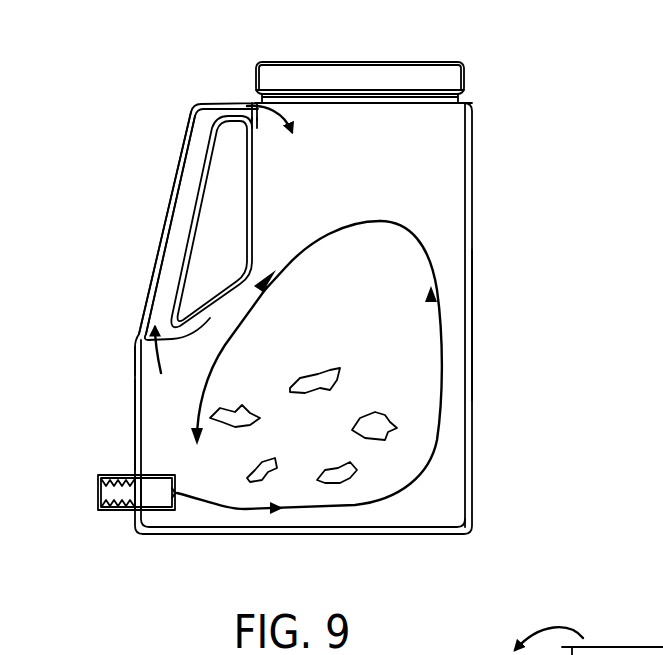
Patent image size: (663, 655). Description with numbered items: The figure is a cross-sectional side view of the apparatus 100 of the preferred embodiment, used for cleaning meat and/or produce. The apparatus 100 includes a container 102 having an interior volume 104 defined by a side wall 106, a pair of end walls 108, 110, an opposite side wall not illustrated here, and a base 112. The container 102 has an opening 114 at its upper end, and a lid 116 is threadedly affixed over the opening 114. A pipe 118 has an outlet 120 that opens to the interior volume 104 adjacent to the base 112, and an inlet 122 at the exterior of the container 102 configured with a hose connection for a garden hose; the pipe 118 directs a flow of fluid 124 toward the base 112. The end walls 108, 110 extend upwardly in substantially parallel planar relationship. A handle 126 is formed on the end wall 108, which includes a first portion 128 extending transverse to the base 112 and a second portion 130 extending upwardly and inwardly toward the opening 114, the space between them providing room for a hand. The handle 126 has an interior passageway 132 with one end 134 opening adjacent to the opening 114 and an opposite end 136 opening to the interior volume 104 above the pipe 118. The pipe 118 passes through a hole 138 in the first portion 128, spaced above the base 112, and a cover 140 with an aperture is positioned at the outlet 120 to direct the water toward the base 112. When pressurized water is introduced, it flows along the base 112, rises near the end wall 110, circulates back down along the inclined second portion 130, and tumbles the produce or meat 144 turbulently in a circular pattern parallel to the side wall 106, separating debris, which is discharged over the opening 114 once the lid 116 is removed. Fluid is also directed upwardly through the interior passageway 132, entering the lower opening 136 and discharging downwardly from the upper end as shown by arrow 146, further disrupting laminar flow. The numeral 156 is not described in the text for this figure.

The apparatus 100 is at (528, 256).
The container 102 is at (467, 367).
The interior volume 104 is at (445, 196).
The side wall 106 is at (450, 143).
The end wall 108 is at (136, 412).
The end wall 110 is at (470, 328).
The base 112 is at (404, 536).
The opening 114 is at (445, 78).
The lid 116 is at (372, 62).
The pipe 118 is at (107, 477).
The outlet 120 is at (180, 494).
The inlet 122 is at (98, 500).
The flow of fluid 124 is at (403, 487).
The handle 126 is at (170, 244).
The first portion 128 is at (133, 350).
The second portion 130 is at (252, 253).
The interior passageway 132 is at (192, 177).
The end 134 is at (252, 118).
The opposite end 136 is at (158, 342).
The hole 138 is at (148, 472).
The cover 140 is at (216, 441).
The produce or meat 144 is at (333, 368).
The arrow 146 is at (297, 128).
The flow direction 156 is at (533, 633).